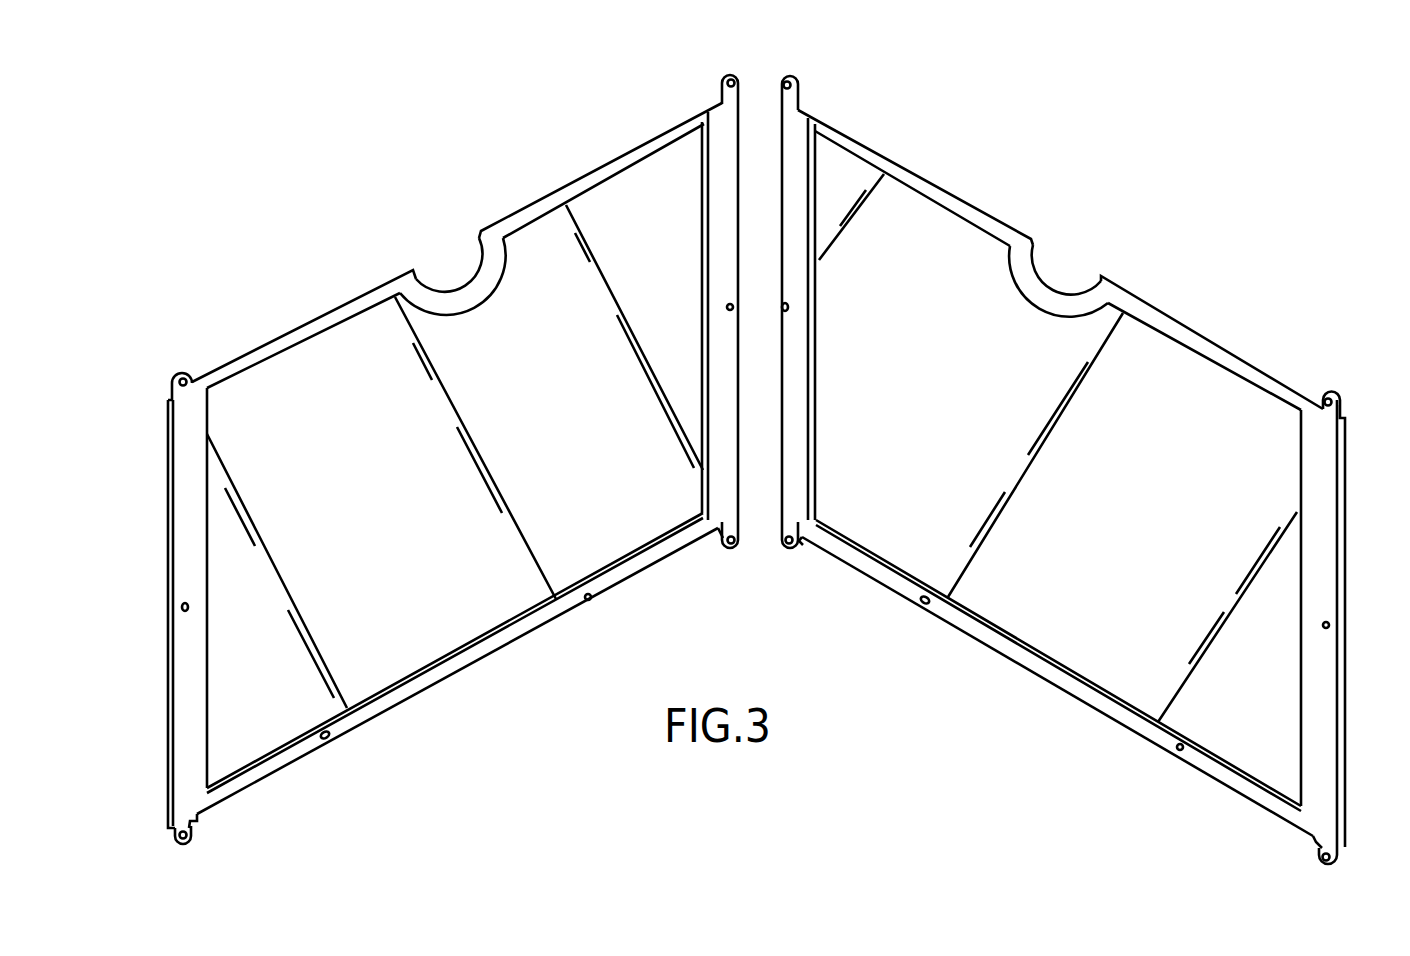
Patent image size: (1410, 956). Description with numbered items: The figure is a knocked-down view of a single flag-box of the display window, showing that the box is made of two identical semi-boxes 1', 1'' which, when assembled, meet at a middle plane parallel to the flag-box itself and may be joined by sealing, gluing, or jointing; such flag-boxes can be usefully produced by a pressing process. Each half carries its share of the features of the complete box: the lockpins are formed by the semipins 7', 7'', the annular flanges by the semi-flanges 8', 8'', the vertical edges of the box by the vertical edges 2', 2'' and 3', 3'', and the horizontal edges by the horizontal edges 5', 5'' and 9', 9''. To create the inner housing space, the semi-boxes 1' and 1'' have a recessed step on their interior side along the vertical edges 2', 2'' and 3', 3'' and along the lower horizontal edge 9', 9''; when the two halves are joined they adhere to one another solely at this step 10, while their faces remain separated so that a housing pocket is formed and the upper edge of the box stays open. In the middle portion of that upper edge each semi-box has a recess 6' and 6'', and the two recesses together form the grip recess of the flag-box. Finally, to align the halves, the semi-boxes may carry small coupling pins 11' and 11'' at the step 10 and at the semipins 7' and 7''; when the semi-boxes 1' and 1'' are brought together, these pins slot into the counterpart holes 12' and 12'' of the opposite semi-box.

The semi-box 1' is at (457, 242).
The vertical edge 2' is at (700, 301).
The vertical edge 3' is at (171, 608).
The horizontal edge 5' is at (455, 256).
The recess 6' is at (453, 269).
The semipin 7' is at (443, 459).
The semi-flange 8' is at (431, 678).
The horizontal edge 9' is at (457, 671).
The step 10 is at (385, 702).
The coupling pin 11' is at (276, 596).
The hole 12' is at (683, 354).
The semi-box 1'' is at (1060, 259).
The vertical edge 2'' is at (783, 302).
The vertical edge 3'' is at (1353, 623).
The horizontal edge 5'' is at (1058, 270).
The recess 6'' is at (1058, 277).
The semipin 7'' is at (1079, 466).
The semi-flange 8'' is at (1089, 672).
The horizontal edge 9'' is at (1057, 686).
The coupling pin 11'' is at (862, 368).
The hole 12'' is at (1279, 613).